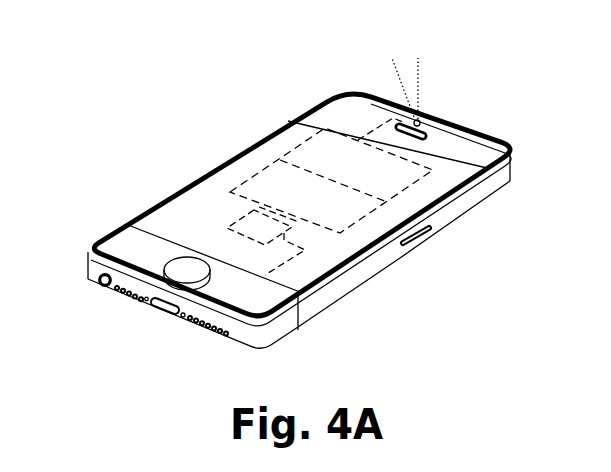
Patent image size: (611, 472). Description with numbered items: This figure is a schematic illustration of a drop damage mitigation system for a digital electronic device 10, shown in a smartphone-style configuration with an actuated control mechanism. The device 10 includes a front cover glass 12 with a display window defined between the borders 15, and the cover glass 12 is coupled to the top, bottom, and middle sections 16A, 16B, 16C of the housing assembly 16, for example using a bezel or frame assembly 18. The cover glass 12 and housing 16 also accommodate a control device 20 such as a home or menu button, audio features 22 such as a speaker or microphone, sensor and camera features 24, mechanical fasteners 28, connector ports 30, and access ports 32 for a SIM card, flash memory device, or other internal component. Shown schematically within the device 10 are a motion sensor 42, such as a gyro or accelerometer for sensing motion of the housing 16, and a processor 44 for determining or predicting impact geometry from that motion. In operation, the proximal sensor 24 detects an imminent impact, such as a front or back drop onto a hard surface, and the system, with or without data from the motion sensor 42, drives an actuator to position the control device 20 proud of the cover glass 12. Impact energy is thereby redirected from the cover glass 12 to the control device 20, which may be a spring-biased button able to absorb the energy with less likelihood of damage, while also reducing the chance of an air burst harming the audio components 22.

The digital electronic device 10 is at (150, 97).
The front cover glass 12 is at (196, 211).
The borders 15 is at (358, 110).
The housing assembly 16 is at (308, 265).
The top housing section 16A is at (272, 338).
The bottom housing section 16B is at (492, 176).
The middle housing section 16C is at (317, 305).
The bezel or frame assembly 18 is at (360, 272).
The control device 20 is at (172, 260).
The audio features 22 is at (431, 122).
The sensor and camera features 24 is at (420, 119).
The mechanical fasteners 28 is at (182, 319).
The connector ports 30 is at (97, 286).
The access ports 32 is at (428, 240).
The motion sensor 42 is at (301, 147).
The processor 44 is at (253, 170).